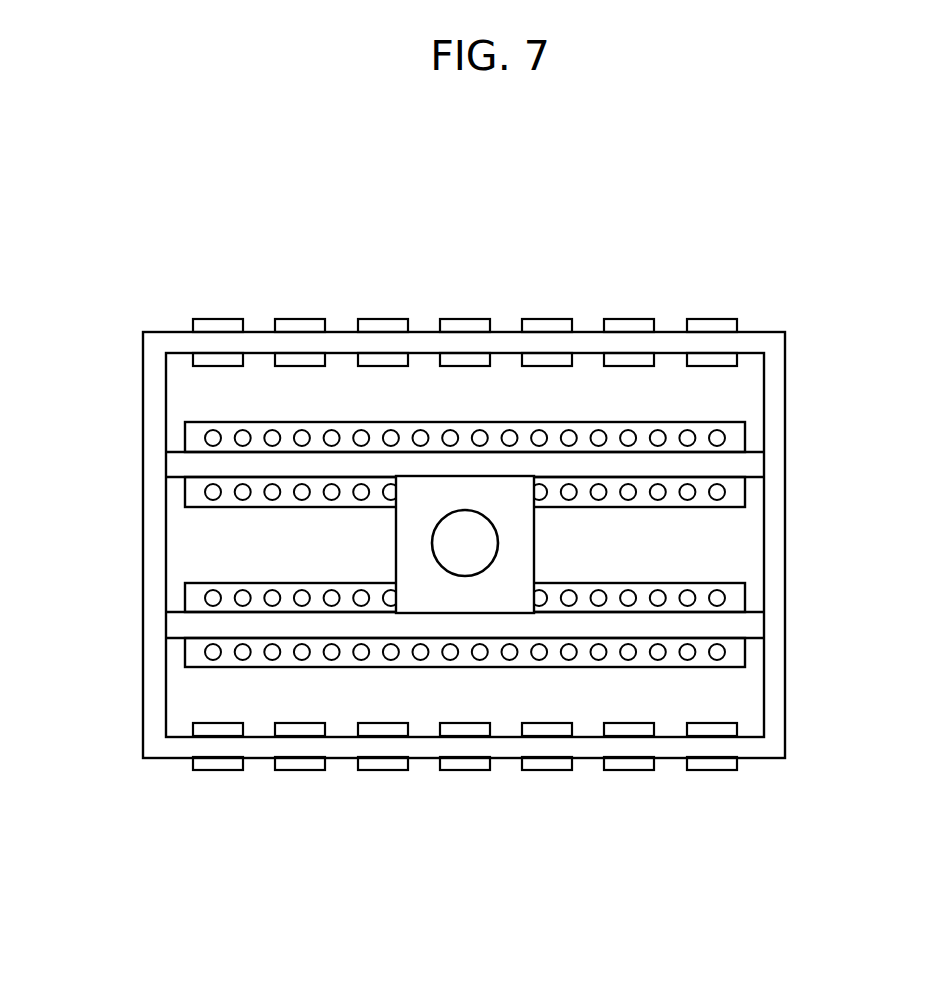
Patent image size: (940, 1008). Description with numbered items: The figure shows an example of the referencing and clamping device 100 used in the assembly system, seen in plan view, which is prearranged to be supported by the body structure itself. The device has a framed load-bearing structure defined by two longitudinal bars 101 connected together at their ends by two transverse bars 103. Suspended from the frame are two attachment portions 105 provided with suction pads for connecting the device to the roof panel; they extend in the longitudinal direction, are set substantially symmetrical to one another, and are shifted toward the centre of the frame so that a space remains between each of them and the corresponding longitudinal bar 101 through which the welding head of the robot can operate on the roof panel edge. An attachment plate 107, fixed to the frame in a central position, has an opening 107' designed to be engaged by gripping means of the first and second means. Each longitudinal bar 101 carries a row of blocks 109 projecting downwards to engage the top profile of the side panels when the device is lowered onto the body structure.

The clamping device 100 is at (487, 524).
The longitudinal bars 101 is at (503, 342).
The transverse bars 103 is at (158, 541).
The attachment portions 105 is at (657, 582).
The attachment plate 107 is at (504, 544).
The opening 107' is at (403, 543).
The blocks 109 is at (230, 318).